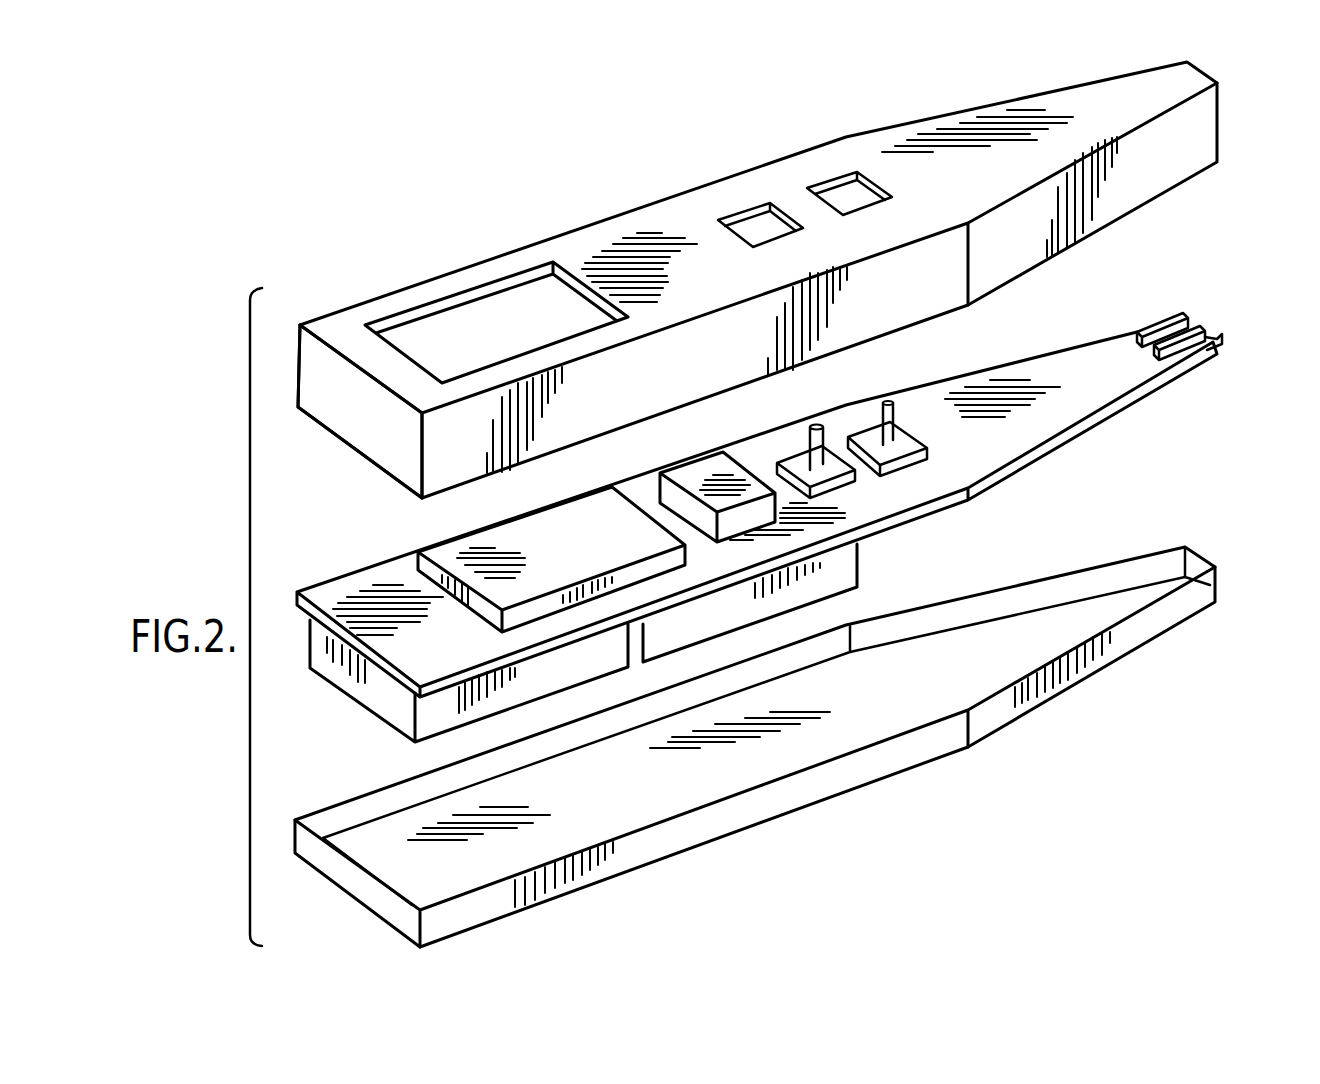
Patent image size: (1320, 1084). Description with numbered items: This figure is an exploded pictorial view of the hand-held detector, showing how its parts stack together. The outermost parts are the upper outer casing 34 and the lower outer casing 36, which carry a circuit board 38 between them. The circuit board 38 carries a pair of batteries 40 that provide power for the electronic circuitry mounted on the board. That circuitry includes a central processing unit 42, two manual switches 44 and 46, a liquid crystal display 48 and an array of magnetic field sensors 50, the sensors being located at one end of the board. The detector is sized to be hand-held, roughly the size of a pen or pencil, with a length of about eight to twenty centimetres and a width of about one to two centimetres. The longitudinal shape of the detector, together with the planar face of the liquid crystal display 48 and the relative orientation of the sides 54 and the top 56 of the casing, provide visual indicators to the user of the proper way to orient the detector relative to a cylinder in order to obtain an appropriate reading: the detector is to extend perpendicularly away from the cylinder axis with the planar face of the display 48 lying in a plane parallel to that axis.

The upper outer casing 34 is at (692, 183).
The lower outer casing 36 is at (751, 843).
The circuit board 38 is at (355, 588).
The batteries 40 is at (380, 692).
The central processing unit 42 is at (700, 477).
The manual switch 44 is at (821, 426).
The manual switch 46 is at (890, 402).
The liquid crystal display 48 is at (565, 559).
The array of magnetic field sensors 50 is at (1215, 300).
The sides of the casing 54 is at (298, 353).
The top of the casing 56 is at (600, 248).